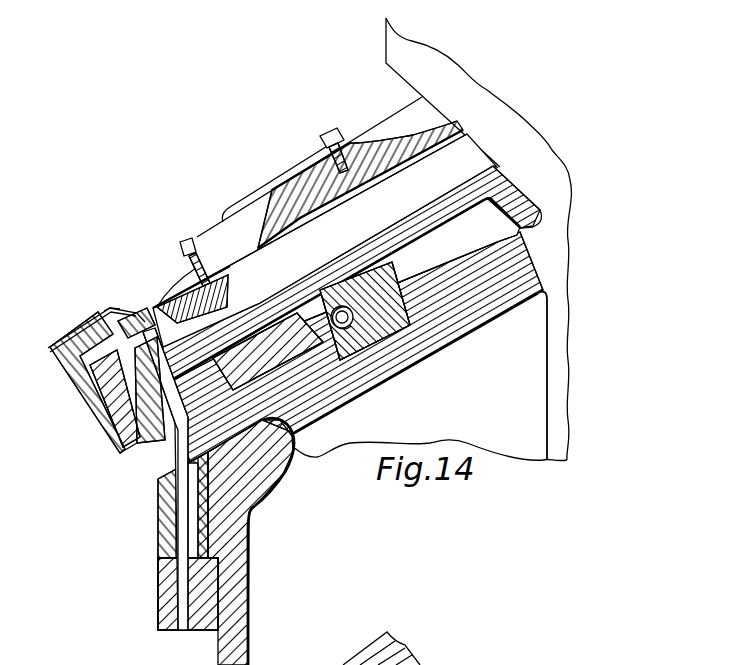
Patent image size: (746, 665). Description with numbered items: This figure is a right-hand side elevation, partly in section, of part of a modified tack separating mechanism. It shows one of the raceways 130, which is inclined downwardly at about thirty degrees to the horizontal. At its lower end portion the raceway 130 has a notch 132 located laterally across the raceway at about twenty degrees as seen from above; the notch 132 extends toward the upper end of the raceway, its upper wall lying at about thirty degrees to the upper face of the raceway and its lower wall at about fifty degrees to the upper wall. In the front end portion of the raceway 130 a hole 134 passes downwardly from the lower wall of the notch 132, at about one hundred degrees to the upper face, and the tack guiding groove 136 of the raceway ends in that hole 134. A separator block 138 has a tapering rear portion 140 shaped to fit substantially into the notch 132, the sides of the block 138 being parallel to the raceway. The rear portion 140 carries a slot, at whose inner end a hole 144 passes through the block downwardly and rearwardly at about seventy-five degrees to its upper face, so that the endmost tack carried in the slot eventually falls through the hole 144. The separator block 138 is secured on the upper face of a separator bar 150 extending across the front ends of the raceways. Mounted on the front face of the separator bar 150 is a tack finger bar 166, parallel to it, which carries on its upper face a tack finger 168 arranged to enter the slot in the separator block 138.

The raceway 130 is at (497, 172).
The notch 132 is at (168, 318).
The hole 134 is at (216, 330).
The tack guiding groove 136 is at (468, 178).
The separator block 138 is at (125, 320).
The tapering rear portion 140 is at (158, 307).
The hole 144 is at (110, 336).
The separator bar 150 is at (133, 412).
The tack finger bar 166 is at (75, 385).
The tack finger 168 is at (108, 310).